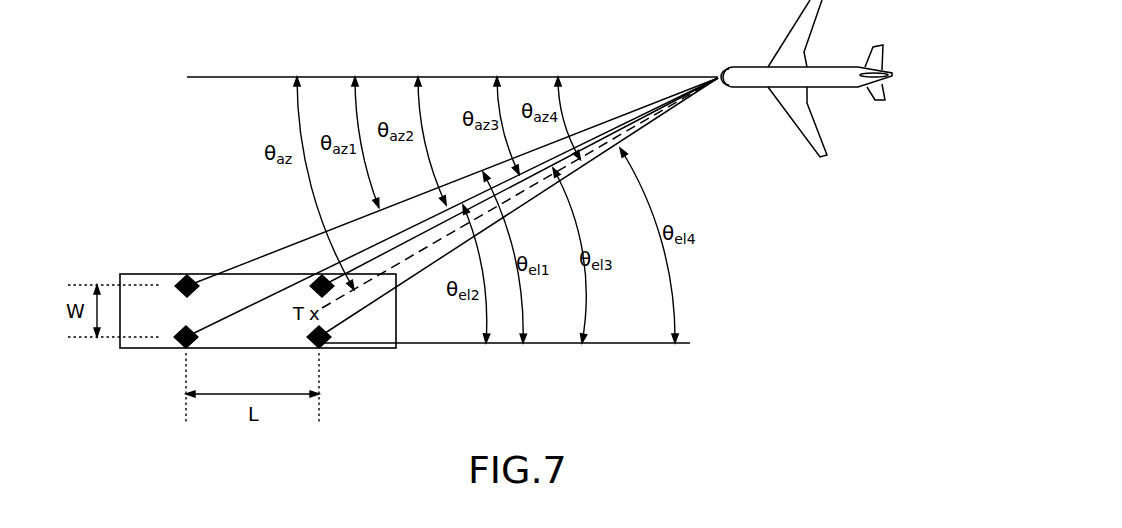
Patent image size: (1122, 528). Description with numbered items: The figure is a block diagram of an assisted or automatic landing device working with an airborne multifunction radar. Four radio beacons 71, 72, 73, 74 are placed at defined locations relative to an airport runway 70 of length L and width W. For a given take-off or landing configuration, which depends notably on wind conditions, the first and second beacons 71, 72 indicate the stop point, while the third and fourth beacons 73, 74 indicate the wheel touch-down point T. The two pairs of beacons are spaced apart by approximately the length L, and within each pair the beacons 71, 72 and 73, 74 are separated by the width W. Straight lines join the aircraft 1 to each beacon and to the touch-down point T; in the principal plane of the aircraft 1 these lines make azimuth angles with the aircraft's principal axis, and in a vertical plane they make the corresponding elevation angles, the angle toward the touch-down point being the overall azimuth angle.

The aircraft 1 is at (833, 103).
The airport runway 70 is at (375, 325).
The first beacon 71 is at (180, 279).
The second beacon 72 is at (178, 343).
The third beacon 73 is at (318, 279).
The fourth beacon 74 is at (327, 344).